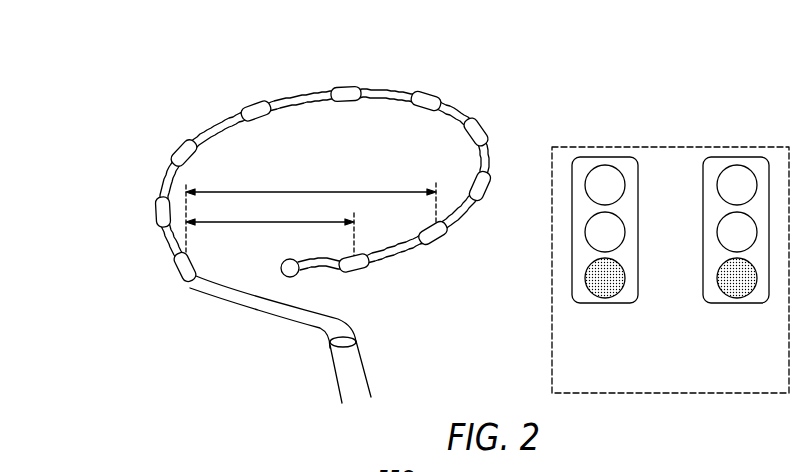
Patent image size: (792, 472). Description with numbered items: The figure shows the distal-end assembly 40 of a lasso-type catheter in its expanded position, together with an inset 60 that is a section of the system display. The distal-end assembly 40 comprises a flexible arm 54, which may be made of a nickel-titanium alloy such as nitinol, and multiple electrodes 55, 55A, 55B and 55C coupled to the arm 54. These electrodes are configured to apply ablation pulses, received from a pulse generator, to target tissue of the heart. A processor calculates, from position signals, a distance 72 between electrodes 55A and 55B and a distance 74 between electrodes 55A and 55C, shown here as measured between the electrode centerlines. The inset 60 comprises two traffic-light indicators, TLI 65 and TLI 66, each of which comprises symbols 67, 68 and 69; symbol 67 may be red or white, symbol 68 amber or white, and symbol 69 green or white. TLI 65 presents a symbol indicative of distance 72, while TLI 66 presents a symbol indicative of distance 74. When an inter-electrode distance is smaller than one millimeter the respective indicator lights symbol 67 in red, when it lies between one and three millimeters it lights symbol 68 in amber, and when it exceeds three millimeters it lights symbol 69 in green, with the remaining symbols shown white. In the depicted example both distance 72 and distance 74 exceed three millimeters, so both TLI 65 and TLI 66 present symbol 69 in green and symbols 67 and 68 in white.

The distal-end assembly 40 is at (468, 334).
The flexible arm 54 is at (249, 308).
The electrodes 55 is at (155, 213).
The electrode 55A is at (170, 278).
The electrode 55B is at (443, 247).
The electrode 55C is at (368, 278).
The inset 60 is at (757, 148).
The TLI 65 is at (604, 324).
The TLI 66 is at (737, 324).
The symbol 67 is at (717, 185).
The symbol 68 is at (717, 232).
The symbol 69 is at (717, 278).
The distance 72 is at (315, 191).
The distance 74 is at (272, 224).